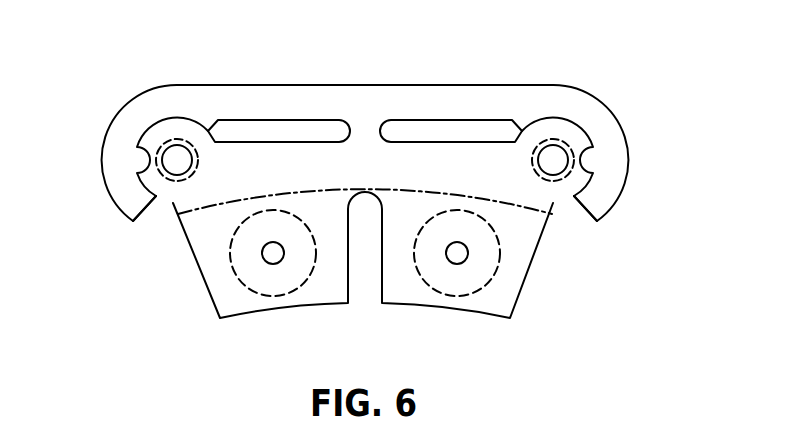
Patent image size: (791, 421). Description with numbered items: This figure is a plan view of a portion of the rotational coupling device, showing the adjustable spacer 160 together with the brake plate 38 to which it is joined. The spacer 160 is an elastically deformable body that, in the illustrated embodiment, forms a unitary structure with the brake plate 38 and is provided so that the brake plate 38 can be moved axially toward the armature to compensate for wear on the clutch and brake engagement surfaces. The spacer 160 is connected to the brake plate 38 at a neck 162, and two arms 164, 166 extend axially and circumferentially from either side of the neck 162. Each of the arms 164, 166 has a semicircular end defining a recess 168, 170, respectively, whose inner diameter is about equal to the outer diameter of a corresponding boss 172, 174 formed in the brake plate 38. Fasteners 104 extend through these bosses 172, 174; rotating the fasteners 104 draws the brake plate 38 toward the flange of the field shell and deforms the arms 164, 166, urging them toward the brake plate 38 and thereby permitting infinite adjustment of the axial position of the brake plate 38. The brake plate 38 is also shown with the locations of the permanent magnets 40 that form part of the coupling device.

The adjustable spacer 160 is at (135, 94).
The fasteners 104 is at (177, 158).
The neck 162 is at (364, 128).
The arm 164 is at (235, 103).
The arm 166 is at (572, 107).
The recess 168 is at (143, 170).
The recess 170 is at (598, 171).
The boss 172 is at (175, 190).
The boss 174 is at (560, 193).
The brake plate 38 is at (497, 297).
The permanent magnets 40 is at (292, 268).